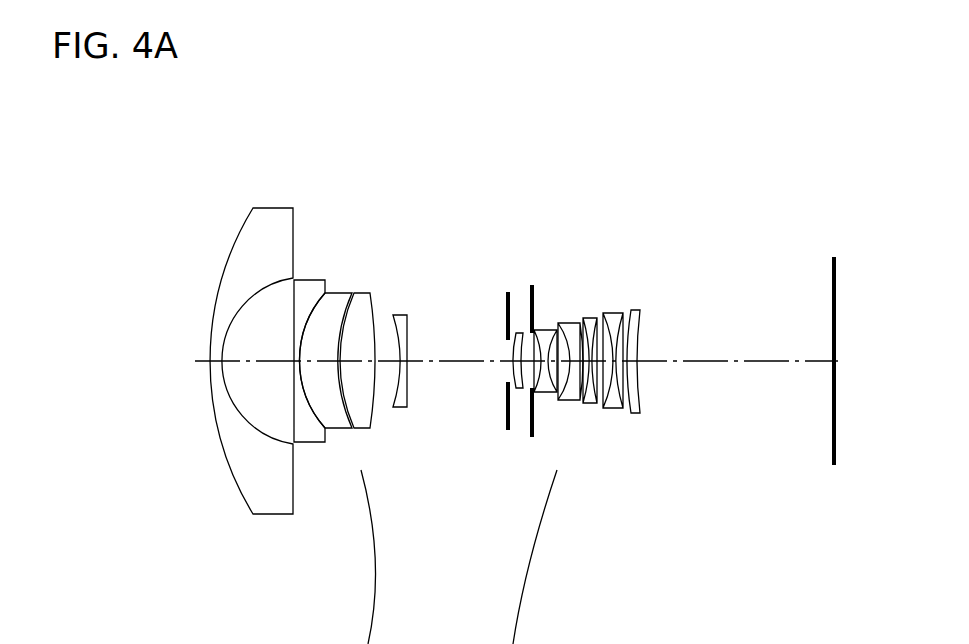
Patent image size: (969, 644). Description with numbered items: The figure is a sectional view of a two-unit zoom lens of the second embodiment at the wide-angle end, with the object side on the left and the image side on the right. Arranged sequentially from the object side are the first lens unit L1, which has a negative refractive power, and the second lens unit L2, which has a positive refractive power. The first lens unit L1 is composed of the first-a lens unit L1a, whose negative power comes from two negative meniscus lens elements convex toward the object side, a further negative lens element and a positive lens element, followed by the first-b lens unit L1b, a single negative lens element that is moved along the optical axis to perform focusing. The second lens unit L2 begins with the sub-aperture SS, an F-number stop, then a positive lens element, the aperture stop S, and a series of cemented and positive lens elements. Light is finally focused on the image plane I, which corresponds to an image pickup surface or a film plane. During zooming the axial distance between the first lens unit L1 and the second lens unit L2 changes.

The first lens unit L1 is at (435, 143).
The first-a lens unit L1a is at (230, 194).
The first-b lens unit L1b is at (383, 194).
The second lens unit L2 is at (653, 143).
The sub-aperture SS is at (508, 308).
The aperture stop S is at (533, 300).
The image plane I is at (833, 280).